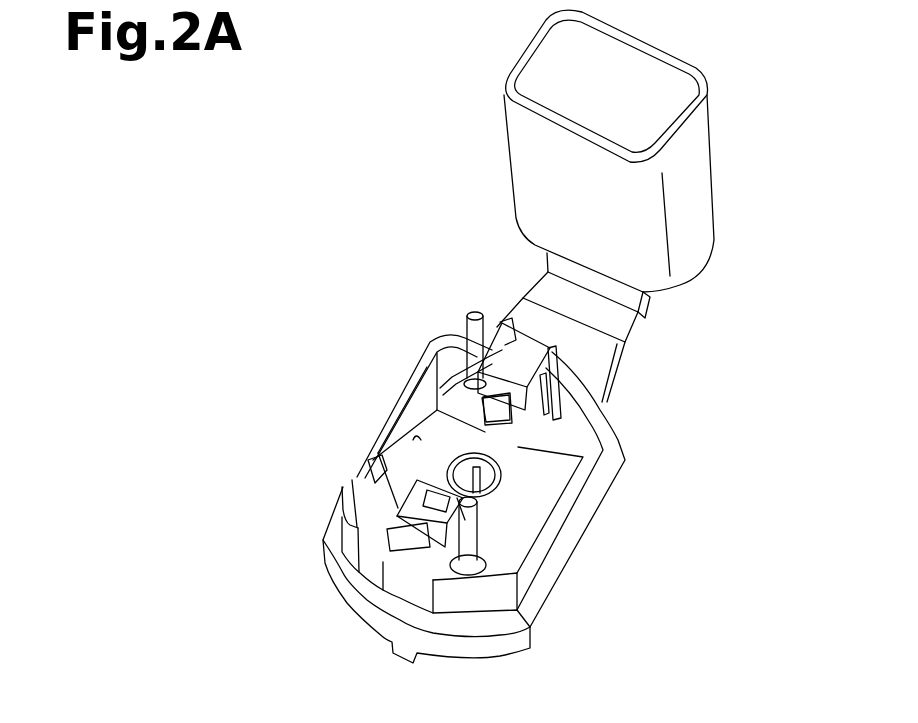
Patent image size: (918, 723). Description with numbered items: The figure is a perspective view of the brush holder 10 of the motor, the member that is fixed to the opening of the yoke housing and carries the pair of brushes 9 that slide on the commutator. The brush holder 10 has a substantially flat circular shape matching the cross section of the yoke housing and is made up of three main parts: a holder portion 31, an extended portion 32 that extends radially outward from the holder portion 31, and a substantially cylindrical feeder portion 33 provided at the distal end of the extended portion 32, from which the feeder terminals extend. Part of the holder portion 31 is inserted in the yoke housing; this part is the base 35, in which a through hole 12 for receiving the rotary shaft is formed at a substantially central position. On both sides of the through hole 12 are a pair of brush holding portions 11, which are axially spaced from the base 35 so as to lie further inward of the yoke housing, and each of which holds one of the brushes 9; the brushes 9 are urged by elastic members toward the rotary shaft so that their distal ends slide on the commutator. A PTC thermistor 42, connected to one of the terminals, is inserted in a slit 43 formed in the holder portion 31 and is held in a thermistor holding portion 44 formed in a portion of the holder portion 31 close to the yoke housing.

The brush holder 10 is at (372, 129).
The feeder portion 33 is at (715, 147).
The extended portion 32 is at (648, 298).
The holder portion 31 is at (620, 443).
The base 35 is at (527, 507).
The thermistor 42 is at (420, 392).
The slit 43 is at (418, 437).
The thermistor holding portion 44 is at (363, 471).
The through hole 12 is at (497, 472).
The brush holding portion 11 is at (518, 368).
The brush 9 is at (513, 421).